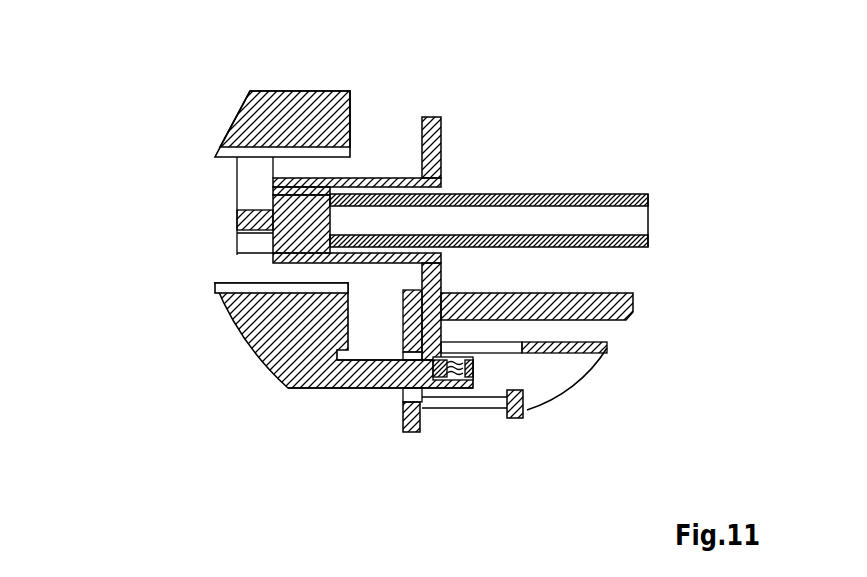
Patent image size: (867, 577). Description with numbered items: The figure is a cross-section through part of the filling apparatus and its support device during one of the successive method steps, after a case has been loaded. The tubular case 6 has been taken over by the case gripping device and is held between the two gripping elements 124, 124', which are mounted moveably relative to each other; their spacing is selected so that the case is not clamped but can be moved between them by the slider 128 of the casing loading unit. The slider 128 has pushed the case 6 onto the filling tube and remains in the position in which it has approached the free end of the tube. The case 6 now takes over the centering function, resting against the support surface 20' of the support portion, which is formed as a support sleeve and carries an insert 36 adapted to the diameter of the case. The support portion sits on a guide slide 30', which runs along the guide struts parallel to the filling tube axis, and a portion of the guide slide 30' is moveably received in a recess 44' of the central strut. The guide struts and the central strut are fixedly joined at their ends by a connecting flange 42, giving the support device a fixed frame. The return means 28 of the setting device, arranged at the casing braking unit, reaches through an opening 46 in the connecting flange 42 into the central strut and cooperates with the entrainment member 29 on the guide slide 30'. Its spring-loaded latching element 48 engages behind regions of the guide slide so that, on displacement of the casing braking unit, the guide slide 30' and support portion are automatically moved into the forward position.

The gripping element 124' is at (252, 97).
The support surface 20' is at (460, 144).
The slider 128 is at (255, 183).
The tubular case 6 is at (272, 243).
The insert 36 is at (273, 267).
The guide slide 30' is at (527, 235).
The recess 44' is at (553, 231).
The gripping element 124 is at (358, 346).
The return means 28 is at (320, 387).
The opening 46 is at (402, 397).
The connecting flange 42 is at (407, 433).
The entrainment member 29 is at (432, 357).
The spring-loaded latching element 48 is at (462, 362).